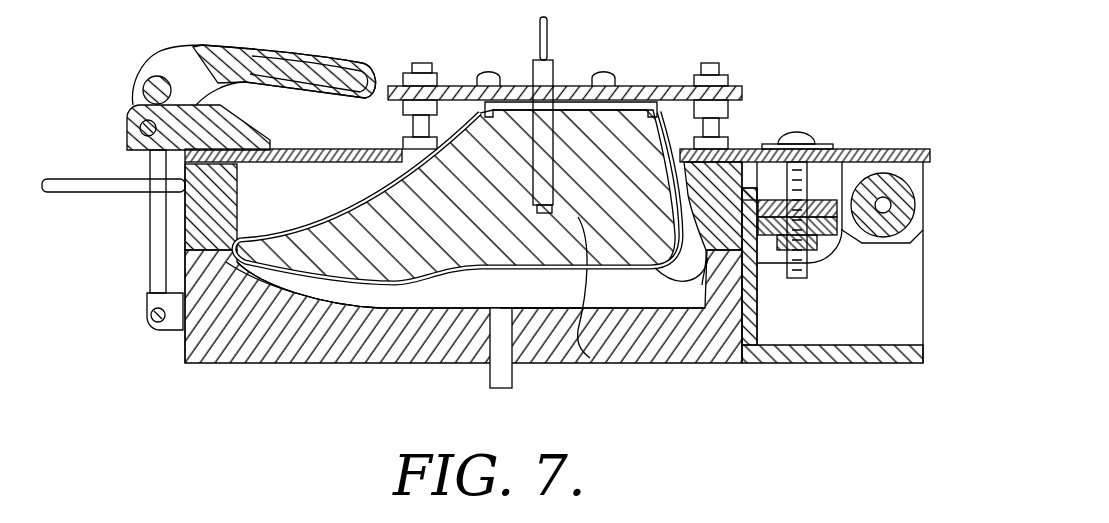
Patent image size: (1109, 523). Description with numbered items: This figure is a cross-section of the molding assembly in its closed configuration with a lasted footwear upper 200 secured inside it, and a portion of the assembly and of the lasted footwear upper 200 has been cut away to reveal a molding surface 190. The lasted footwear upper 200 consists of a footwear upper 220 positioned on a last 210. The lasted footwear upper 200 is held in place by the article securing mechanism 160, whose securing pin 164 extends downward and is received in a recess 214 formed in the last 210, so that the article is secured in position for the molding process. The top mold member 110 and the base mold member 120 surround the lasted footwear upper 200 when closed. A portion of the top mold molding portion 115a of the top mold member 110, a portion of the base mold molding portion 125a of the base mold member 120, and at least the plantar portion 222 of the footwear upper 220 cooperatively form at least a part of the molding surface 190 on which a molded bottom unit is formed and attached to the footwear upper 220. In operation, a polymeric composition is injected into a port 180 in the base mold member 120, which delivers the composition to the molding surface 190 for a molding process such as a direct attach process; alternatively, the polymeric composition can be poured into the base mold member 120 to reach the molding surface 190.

The top mold member 110 is at (200, 205).
The top mold molding portion 115a is at (702, 285).
The base mold member 120 is at (205, 348).
The base mold molding portion 125a is at (368, 298).
The article securing mechanism 160 is at (663, 73).
The securing pin 164 is at (552, 78).
The port 180 is at (500, 380).
The molding surface 190 is at (538, 284).
The lasted footwear upper 200 is at (660, 135).
The last 210 is at (497, 152).
The recess 214 is at (590, 358).
The footwear upper 220 is at (333, 213).
The plantar portion 222 is at (423, 297).